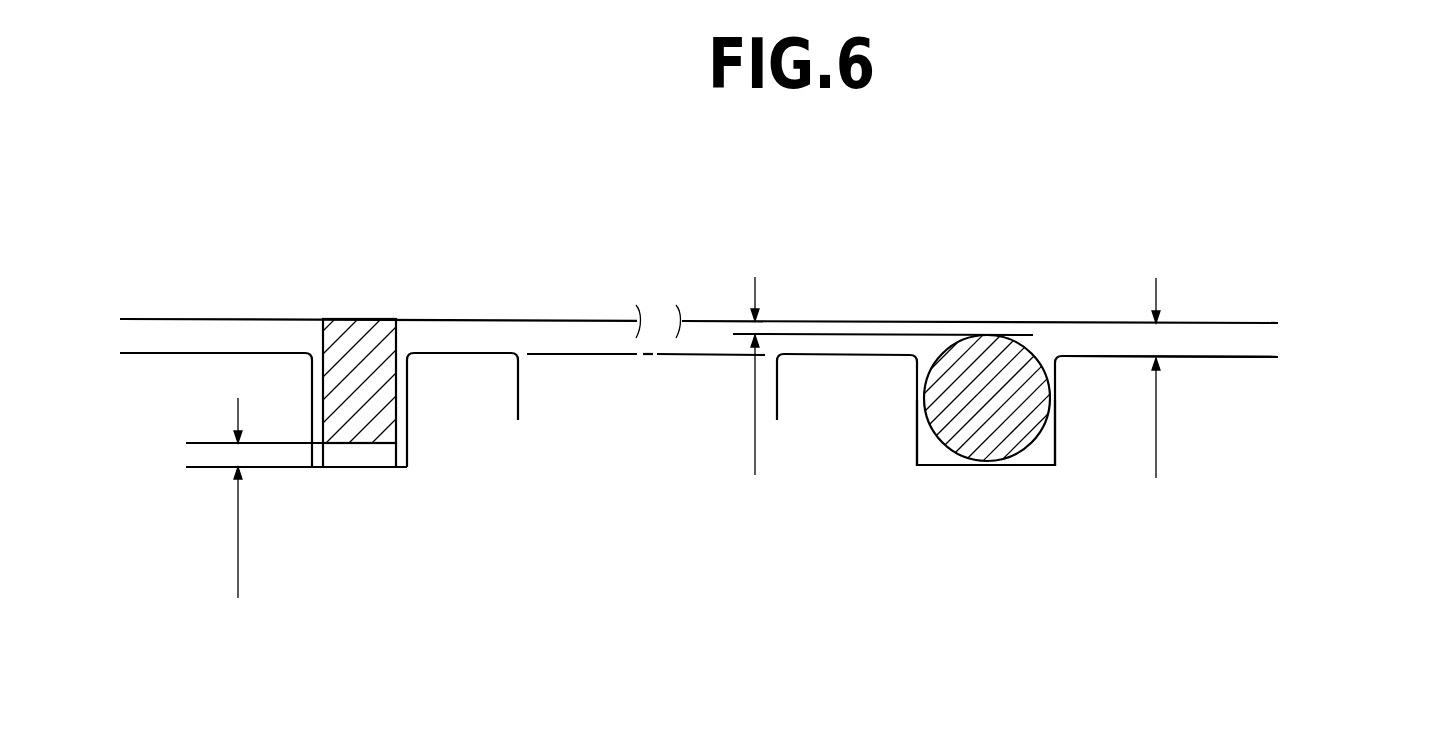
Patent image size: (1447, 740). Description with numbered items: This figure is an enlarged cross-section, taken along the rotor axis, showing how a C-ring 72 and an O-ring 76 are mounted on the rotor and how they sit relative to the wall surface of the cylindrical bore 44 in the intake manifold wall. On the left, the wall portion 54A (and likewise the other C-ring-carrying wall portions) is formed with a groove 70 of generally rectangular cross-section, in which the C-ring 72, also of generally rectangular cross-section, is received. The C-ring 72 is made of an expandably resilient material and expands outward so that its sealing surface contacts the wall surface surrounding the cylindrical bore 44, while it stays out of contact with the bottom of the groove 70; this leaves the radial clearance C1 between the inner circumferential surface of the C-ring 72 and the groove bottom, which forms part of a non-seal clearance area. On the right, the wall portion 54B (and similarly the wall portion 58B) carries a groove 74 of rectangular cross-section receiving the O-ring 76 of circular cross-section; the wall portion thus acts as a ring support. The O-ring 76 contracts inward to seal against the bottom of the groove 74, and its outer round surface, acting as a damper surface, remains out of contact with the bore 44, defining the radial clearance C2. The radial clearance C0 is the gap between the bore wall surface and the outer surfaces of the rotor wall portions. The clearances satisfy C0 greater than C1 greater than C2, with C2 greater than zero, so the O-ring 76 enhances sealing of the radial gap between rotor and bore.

The cylindrical bore 44 is at (1272, 326).
The wall portion 54A is at (503, 397).
The wall portion 54B is at (1223, 357).
The wall portion 58B is at (1170, 356).
The groove 70 is at (355, 467).
The C-ring 72 is at (373, 330).
The groove 74 is at (1055, 444).
The O-ring 76 is at (1015, 362).
The radial clearance C0 is at (1157, 358).
The radial clearance C1 is at (238, 455).
The radial clearance C2 is at (757, 327).